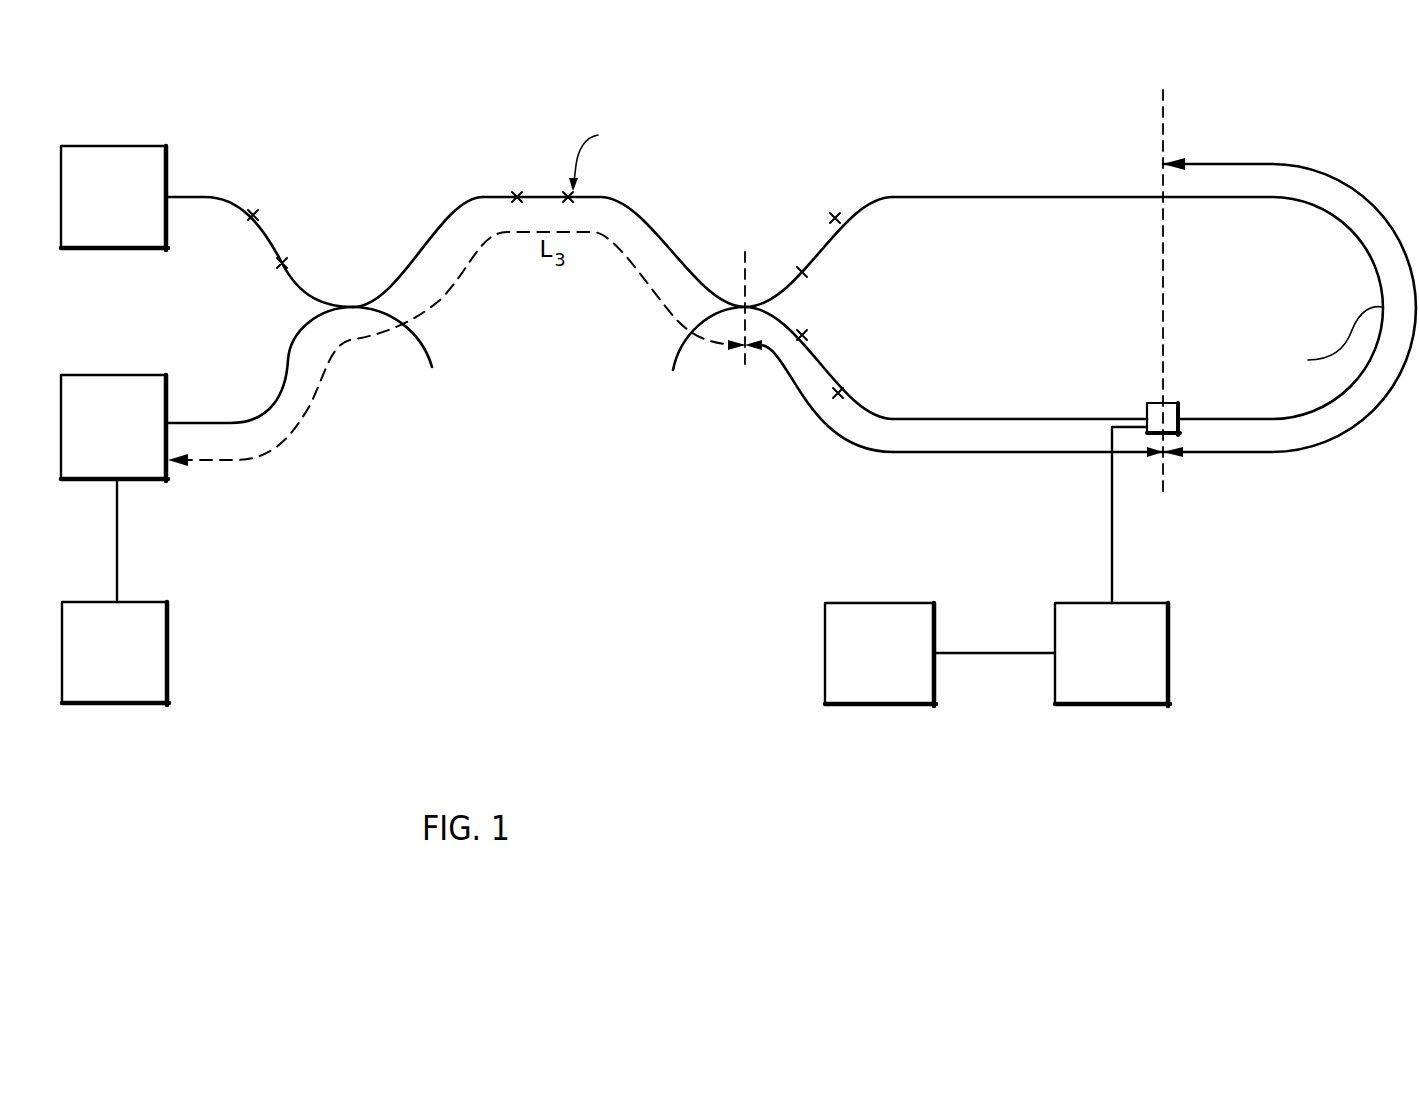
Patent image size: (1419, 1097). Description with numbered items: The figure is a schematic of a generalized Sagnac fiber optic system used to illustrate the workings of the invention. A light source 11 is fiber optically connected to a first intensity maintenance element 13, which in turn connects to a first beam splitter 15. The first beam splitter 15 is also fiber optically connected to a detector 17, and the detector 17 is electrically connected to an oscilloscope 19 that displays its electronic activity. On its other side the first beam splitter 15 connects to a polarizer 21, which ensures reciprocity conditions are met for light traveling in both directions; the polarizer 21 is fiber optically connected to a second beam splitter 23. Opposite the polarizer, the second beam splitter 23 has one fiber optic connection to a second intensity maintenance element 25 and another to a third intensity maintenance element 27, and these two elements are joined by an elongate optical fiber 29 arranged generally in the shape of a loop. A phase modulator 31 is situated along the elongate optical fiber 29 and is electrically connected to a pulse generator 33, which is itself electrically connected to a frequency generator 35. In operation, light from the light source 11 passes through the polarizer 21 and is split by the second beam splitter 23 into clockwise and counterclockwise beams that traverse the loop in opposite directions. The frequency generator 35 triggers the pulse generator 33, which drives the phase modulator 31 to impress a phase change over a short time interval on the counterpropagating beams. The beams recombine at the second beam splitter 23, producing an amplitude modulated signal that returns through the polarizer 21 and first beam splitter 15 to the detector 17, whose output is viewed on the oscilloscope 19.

The light source 11 is at (94, 213).
The first intensity maintenance element 13 is at (271, 229).
The first beam splitter 15 is at (352, 312).
The detector 17 is at (94, 443).
The oscilloscope 19 is at (99, 672).
The polarizer 21 is at (543, 197).
The second beam splitter 23 is at (677, 353).
The second intensity maintenance element 25 is at (818, 243).
The third intensity maintenance element 27 is at (818, 366).
The elongate optical fiber 29 is at (1154, 293).
The phase modulator 31 is at (1148, 403).
The pulse generator 33 is at (1085, 669).
The frequency generator 35 is at (856, 669).